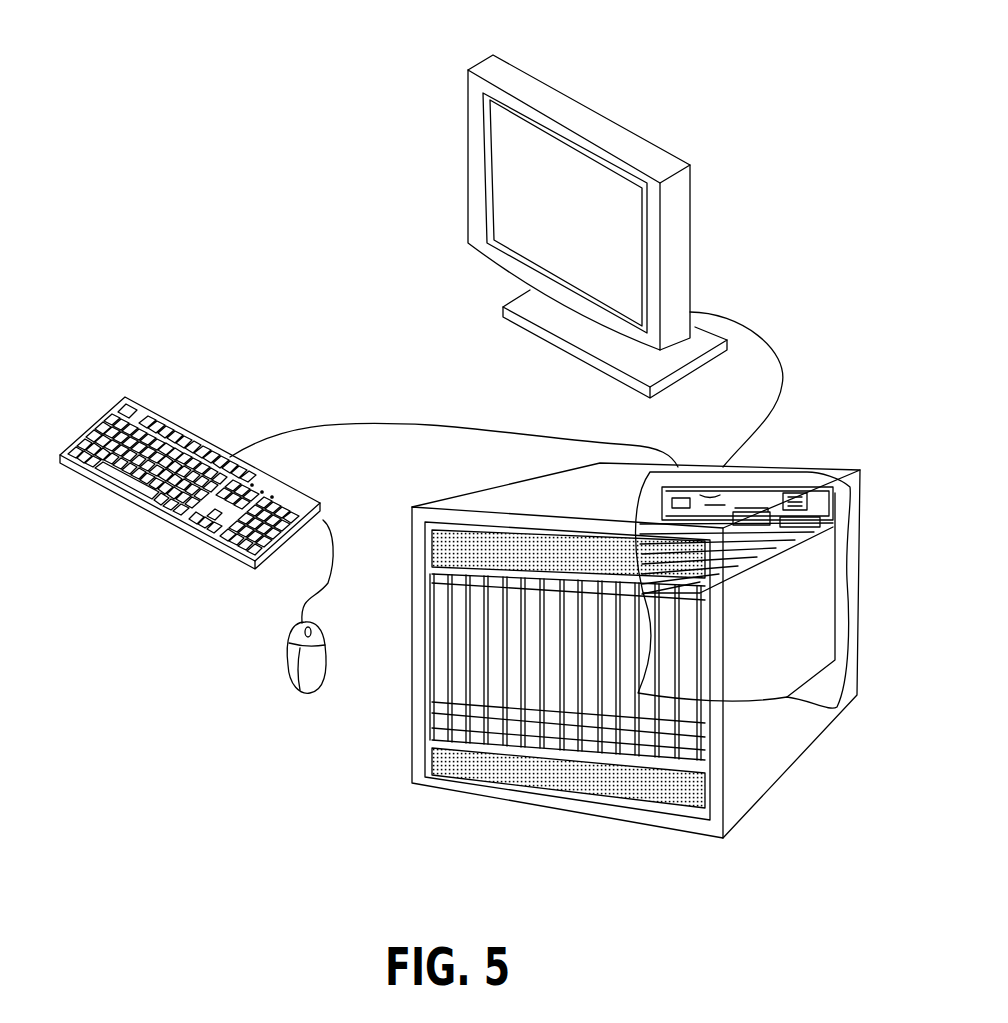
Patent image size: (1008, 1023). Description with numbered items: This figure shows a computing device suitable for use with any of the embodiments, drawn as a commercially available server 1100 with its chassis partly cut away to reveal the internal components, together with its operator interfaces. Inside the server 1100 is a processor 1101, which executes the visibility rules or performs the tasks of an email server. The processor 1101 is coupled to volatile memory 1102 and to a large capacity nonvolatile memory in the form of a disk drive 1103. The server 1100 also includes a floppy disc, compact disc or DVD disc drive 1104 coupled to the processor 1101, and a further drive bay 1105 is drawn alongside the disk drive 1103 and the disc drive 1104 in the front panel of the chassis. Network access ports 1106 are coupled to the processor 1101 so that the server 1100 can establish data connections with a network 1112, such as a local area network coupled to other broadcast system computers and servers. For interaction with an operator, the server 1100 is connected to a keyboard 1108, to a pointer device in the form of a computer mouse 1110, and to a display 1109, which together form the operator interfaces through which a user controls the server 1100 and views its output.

The server 1100 is at (613, 601).
The processor 1101 is at (657, 517).
The volatile memory 1102 is at (813, 523).
The disk drive 1103 is at (477, 623).
The disc drive 1104 is at (437, 677).
The expansion slot 1105 is at (457, 650).
The network access ports 1106 is at (760, 507).
The keyboard 1108 is at (188, 433).
The display 1109 is at (697, 257).
The computer mouse 1110 is at (293, 687).
The network 1112 is at (795, 487).